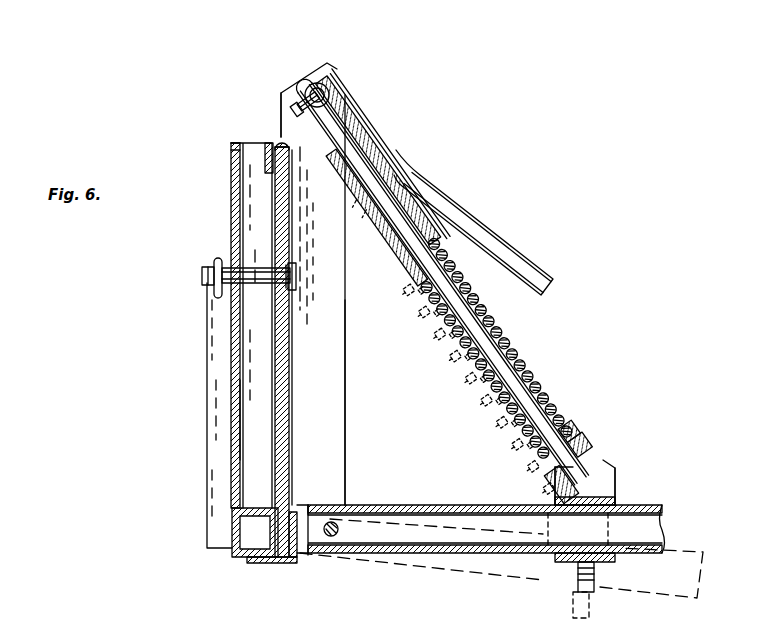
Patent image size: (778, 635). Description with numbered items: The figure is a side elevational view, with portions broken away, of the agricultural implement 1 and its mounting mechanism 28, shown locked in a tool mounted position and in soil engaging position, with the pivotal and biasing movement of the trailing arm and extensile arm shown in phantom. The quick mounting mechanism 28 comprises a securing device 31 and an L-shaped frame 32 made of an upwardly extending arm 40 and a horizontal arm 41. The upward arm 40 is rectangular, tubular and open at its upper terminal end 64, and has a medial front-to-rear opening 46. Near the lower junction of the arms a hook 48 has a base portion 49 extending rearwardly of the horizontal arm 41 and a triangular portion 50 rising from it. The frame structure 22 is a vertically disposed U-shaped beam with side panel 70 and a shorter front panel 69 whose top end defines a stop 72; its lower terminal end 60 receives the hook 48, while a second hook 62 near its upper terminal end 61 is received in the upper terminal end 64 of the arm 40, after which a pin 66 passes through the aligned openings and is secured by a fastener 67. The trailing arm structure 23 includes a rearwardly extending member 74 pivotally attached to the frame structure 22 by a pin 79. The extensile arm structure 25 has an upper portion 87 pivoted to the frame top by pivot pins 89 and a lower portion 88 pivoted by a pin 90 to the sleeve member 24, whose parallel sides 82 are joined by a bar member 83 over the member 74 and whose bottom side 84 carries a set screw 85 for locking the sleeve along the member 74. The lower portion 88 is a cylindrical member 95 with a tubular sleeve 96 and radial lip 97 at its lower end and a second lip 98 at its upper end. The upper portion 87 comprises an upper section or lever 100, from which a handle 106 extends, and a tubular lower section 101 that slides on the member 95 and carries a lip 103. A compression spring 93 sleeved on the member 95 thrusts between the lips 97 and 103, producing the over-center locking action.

The agricultural implement 1 is at (417, 158).
The frame structure 22 is at (347, 381).
The trailing arm structure 23 is at (408, 563).
The sleeve member 24 is at (563, 478).
The extensile arm structure 25 is at (548, 367).
The quick mounting mechanism 28 is at (232, 213).
The securing device 31 is at (215, 471).
The L-shaped frame 32 is at (232, 159).
The upwardly extending arm 40 is at (226, 424).
The horizontal arm 41 is at (228, 540).
The opening 46 is at (290, 264).
The hook 48 is at (262, 565).
The base portion 49 is at (284, 562).
The triangular portion 50 is at (304, 512).
The lower terminal end 60 is at (300, 553).
The upper terminal end 61 is at (285, 143).
The second hook 62 is at (268, 142).
The upper terminal end 64 is at (233, 143).
The pin 66 is at (297, 277).
The fastener 67 is at (214, 266).
The front panel 69 is at (290, 415).
The side panel 70 is at (346, 446).
The stop 72 is at (280, 134).
The rearwardly extending member 74 is at (450, 505).
The pin 79 is at (338, 530).
The parallel sides 82 is at (607, 484).
The bar member 83 is at (616, 500).
The bottom side 84 is at (604, 565).
The set screw 85 is at (578, 575).
The upper portion 87 is at (383, 148).
The lower portion 88 is at (575, 415).
The pivot pins 89 is at (325, 91).
The pin 90 is at (610, 466).
The compression spring 93 is at (505, 335).
The cylindrical member 95 is at (478, 326).
The tubular sleeve 96 is at (592, 455).
The radial lip 97 is at (588, 436).
The second lip 98 is at (324, 113).
The upper section 100 is at (327, 63).
The lower section 101 is at (394, 258).
The radially extending lip 103 is at (448, 268).
The handle 106 is at (536, 258).